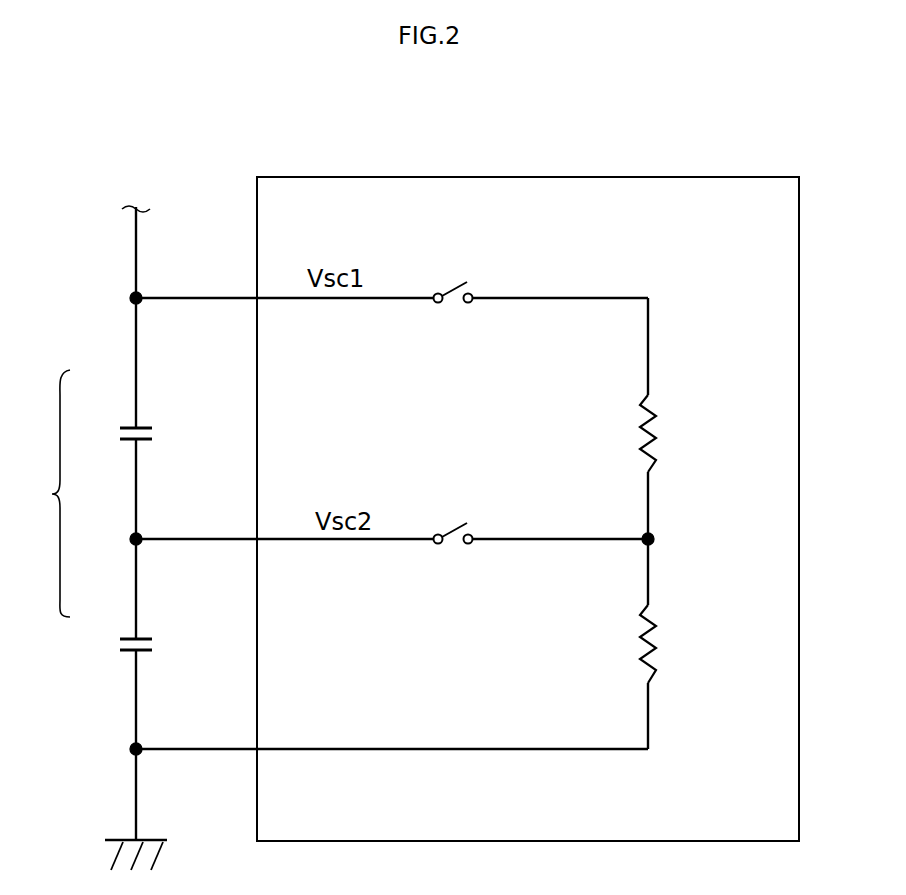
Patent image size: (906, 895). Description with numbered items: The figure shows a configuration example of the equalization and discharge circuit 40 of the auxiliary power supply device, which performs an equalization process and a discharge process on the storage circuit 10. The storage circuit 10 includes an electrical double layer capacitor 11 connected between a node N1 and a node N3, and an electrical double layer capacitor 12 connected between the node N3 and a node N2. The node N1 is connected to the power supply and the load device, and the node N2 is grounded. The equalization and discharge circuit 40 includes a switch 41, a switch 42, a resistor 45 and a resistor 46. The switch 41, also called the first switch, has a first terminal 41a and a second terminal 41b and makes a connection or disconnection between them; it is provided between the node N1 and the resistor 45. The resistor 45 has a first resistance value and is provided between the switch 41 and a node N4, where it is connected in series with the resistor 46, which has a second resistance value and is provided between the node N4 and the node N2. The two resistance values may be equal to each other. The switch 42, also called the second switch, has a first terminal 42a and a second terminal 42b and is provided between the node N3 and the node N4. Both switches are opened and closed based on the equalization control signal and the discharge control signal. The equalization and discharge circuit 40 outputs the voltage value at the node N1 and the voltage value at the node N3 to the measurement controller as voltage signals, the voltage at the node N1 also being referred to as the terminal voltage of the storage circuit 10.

The storage circuit 10 is at (86, 510).
The electrical double layer capacitor 11 is at (120, 418).
The electrical double layer capacitor 12 is at (120, 629).
The equalization and discharge circuit 40 is at (724, 169).
The switch 41 is at (457, 275).
The first terminal 41a is at (426, 286).
The second terminal 41b is at (464, 286).
The switch 42 is at (457, 516).
The first terminal 42a is at (426, 527).
The second terminal 42b is at (464, 527).
The resistor 45 is at (643, 399).
The resistor 46 is at (643, 609).
The node N1 is at (134, 288).
The node N2 is at (134, 739).
The node N3 is at (134, 529).
The node N4 is at (646, 527).